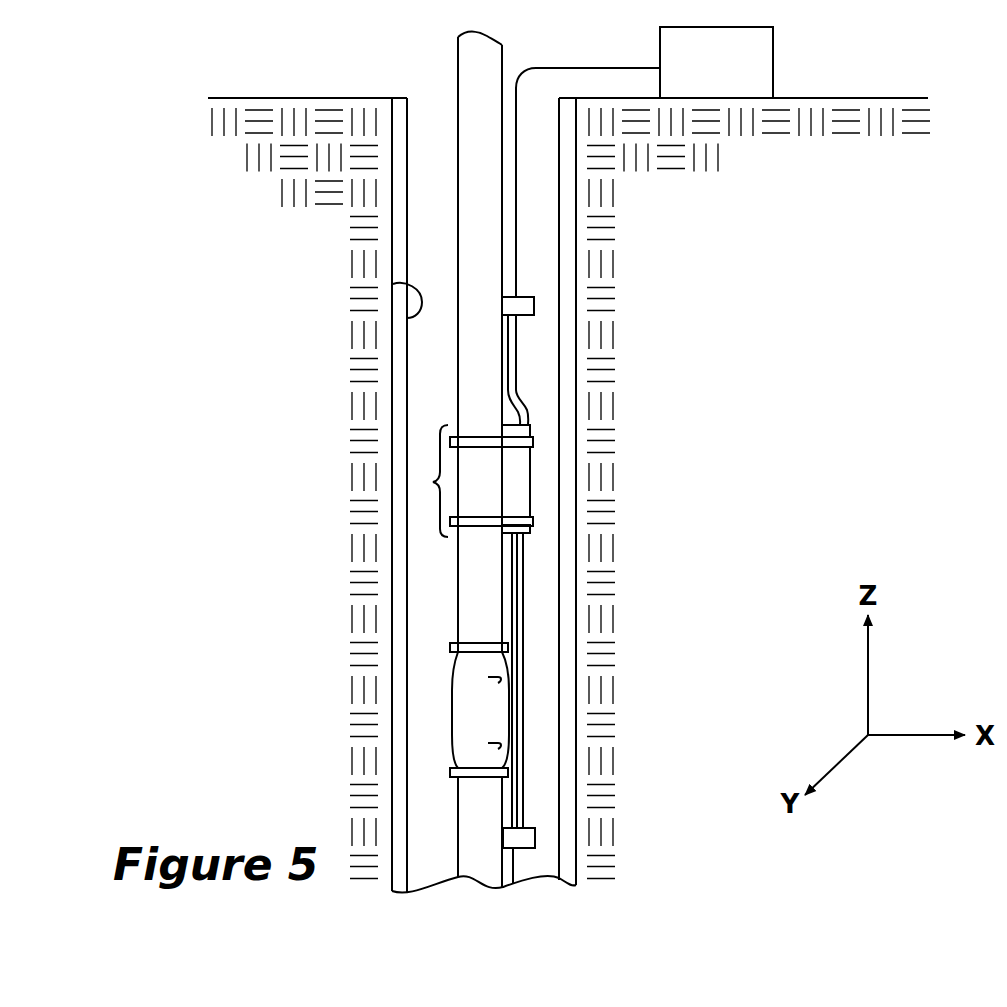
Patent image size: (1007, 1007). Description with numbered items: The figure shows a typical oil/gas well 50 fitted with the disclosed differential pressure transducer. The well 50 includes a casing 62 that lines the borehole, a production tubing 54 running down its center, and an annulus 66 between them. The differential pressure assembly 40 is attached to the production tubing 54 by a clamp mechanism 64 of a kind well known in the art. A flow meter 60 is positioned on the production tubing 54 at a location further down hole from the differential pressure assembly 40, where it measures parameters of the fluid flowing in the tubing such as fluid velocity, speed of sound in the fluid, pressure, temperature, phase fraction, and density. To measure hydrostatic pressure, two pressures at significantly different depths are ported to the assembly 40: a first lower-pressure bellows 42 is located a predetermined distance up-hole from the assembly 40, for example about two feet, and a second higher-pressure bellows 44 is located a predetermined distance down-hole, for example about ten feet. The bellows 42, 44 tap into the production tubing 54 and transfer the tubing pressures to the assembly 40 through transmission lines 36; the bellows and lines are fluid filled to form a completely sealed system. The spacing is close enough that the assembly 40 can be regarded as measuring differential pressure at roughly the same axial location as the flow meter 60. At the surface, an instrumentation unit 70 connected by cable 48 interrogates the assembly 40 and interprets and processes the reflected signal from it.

The transmission lines 36 is at (520, 416).
The differential pressure assembly 40 is at (518, 482).
The first lower-pressure bellows 42 is at (517, 304).
The second higher-pressure bellows 44 is at (518, 838).
The cable 48 is at (516, 193).
The oil/gas well 50 is at (433, 96).
The production tubing 54 is at (458, 50).
The flow meter 60 is at (433, 727).
The casing 62 is at (393, 284).
The clamp mechanism 64 is at (433, 482).
The annulus 66 is at (418, 169).
The instrumentation unit 70 is at (702, 74).